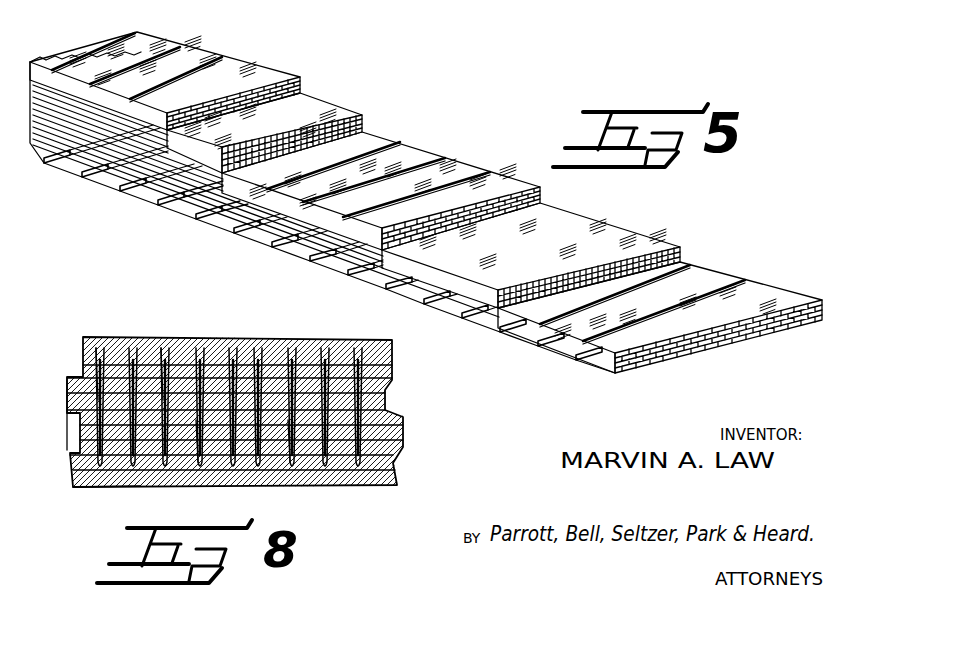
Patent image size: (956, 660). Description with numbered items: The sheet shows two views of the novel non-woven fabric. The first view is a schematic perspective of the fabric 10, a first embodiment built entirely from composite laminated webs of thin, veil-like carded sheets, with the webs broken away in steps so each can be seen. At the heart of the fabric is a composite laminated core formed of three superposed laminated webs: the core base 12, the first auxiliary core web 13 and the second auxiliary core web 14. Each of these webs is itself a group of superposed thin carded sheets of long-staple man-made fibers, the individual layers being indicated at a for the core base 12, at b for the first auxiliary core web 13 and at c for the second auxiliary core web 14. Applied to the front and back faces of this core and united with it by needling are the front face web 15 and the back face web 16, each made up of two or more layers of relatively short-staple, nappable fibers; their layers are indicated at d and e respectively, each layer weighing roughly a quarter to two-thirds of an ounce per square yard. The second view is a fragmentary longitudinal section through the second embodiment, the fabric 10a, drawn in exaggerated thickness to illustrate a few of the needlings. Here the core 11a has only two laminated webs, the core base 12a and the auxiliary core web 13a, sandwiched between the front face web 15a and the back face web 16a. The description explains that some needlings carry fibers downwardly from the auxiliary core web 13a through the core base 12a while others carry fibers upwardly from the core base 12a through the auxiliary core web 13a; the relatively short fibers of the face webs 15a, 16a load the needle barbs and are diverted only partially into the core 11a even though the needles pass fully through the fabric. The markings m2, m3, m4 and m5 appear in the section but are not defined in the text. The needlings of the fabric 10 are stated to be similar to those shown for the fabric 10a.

In FIG. 5, the non-woven fabric 10 is at (426, 194).
In FIG. 5, the front face web 15 is at (177, 71).
In FIG. 5, the second auxiliary core web 14 is at (286, 120).
In FIG. 5, the first auxiliary core web 13 is at (398, 182).
In FIG. 5, the core base 12 is at (544, 241).
In FIG. 5, the back face web 16 is at (660, 303).
In FIG. 5, the carded layers of core base a is at (548, 252).
In FIG. 5, the carded layers of first auxiliary core web b is at (402, 150).
In FIG. 5, the carded layers of second auxiliary core web c is at (270, 130).
In FIG. 5, the layers of front face web d is at (248, 58).
In FIG. 5, the layers of back face web e is at (766, 290).
In FIG. 8, the non-woven fabric 10a is at (259, 396).
In FIG. 8, the front face web 15a is at (305, 337).
In FIG. 8, the auxiliary core web 13a is at (393, 388).
In FIG. 8, the core base 12a is at (404, 420).
In FIG. 8, the back face web 16a is at (400, 470).
In FIG. 8, the core 11a is at (62, 378).
In FIG. 8, the fibre layer m2 is at (113, 374).
In FIG. 8, the fibre layer m3 is at (234, 450).
In FIG. 8, the fibre layer m4 is at (172, 374).
In FIG. 8, the fibre layer m5 is at (105, 488).